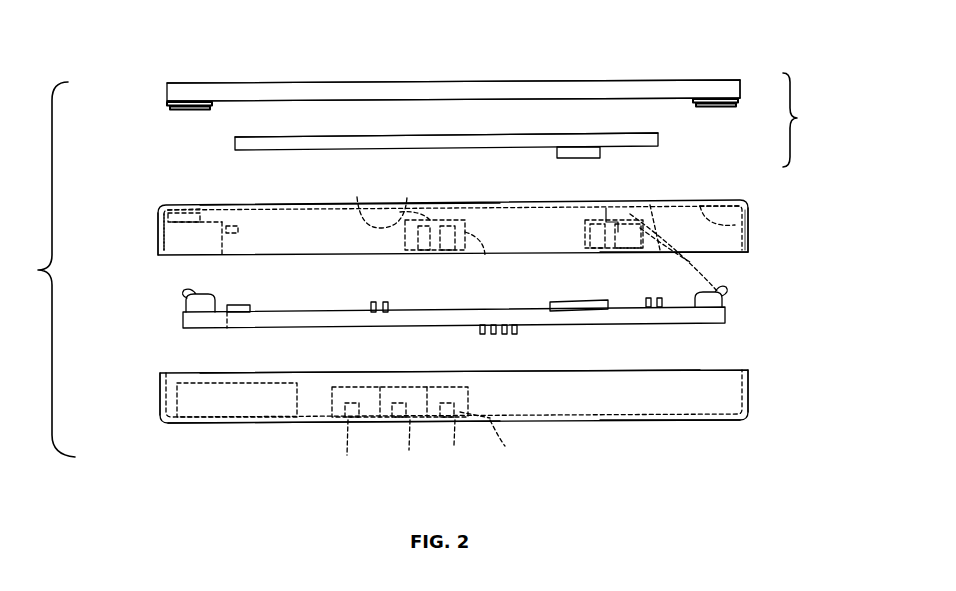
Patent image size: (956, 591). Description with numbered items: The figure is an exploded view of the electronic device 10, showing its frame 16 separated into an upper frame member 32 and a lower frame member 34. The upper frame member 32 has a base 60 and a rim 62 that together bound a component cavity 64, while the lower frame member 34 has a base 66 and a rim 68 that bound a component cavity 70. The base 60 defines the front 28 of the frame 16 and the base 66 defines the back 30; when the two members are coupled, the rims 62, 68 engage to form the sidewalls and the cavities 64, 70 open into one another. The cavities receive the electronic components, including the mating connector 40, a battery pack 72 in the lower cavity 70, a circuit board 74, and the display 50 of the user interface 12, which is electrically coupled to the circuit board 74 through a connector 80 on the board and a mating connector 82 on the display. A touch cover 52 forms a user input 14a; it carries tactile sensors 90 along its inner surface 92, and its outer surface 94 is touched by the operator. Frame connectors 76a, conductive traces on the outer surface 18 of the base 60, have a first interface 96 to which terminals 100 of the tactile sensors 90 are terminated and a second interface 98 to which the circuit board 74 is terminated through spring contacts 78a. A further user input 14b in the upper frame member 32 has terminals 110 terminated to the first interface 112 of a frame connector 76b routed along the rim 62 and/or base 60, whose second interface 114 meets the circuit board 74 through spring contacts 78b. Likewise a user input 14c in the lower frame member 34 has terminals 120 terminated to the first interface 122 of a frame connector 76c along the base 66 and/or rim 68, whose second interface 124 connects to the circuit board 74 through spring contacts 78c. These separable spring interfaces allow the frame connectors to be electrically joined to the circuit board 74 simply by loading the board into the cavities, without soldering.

The electronic device 10 is at (190, 28).
The user interface 12 is at (803, 120).
The user input 14a is at (568, 88).
The user input 14b is at (587, 255).
The user input 14c is at (397, 453).
The frame 16 is at (748, 203).
The outer surface 18 is at (750, 232).
The front 28 is at (228, 205).
The back 30 is at (247, 426).
The upper frame member 32 is at (158, 226).
The lower frame member 34 is at (162, 398).
The mating connector 40 is at (162, 242).
The display 50 is at (266, 158).
The touch cover 52 is at (280, 82).
The base 60 is at (320, 202).
The rim 62 is at (750, 246).
The component cavity 64 is at (722, 250).
The base 66 is at (704, 422).
The rim 68 is at (748, 395).
The component cavity 70 is at (706, 388).
The battery pack 72 is at (200, 410).
The circuit board 74 is at (290, 322).
The frame connector 76a is at (182, 200).
The frame connector 76b is at (404, 210).
The frame connector 76c is at (501, 447).
The spring contact 78a is at (200, 295).
The spring contact 78b is at (385, 300).
The spring contact 78c is at (507, 335).
The connector 80 is at (575, 301).
The mating connector 82 is at (577, 158).
The tactile sensor 90 is at (182, 112).
The inner surface 92 is at (362, 104).
The outer surface 94 is at (386, 84).
The first interface 96 is at (196, 205).
The second interface 98 is at (150, 220).
The terminal 100 is at (738, 106).
The terminal 110 is at (622, 250).
The first interface 112 is at (458, 220).
The second interface 114 is at (357, 199).
The terminal 120 is at (340, 422).
The first interface 122 is at (375, 420).
The second interface 124 is at (493, 420).